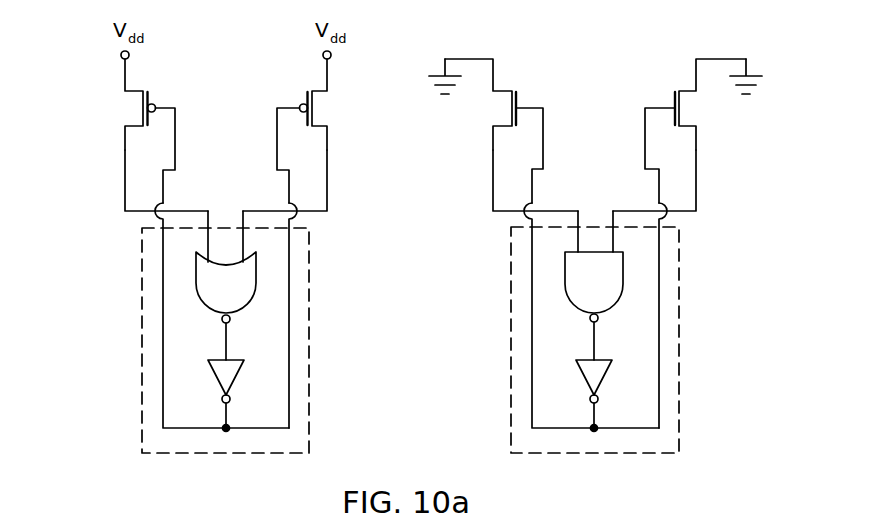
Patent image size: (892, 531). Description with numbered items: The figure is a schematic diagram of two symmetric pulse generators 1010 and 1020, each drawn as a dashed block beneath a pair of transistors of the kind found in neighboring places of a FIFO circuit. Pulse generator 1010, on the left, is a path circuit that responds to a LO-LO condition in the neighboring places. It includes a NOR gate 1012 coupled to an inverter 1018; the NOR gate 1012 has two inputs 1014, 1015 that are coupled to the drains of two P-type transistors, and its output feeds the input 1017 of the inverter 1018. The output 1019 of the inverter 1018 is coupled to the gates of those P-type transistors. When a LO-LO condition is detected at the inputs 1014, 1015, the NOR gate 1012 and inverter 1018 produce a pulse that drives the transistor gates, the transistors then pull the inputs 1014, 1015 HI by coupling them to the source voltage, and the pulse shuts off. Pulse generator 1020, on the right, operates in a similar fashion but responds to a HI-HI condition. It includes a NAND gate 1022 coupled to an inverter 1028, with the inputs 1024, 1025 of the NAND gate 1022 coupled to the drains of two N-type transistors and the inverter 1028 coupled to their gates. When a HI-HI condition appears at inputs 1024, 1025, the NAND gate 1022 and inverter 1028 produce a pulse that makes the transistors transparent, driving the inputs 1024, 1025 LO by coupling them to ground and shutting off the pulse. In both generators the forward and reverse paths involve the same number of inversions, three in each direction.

The pulse generator 1010 is at (142, 432).
The NOR gate 1012 is at (250, 294).
The input 1014 is at (208, 238).
The input 1015 is at (243, 238).
The input of inverter 1017 is at (226, 340).
The inverter 1018 is at (235, 378).
The output of inverter 1019 is at (226, 418).
The pulse generator 1020 is at (511, 431).
The NAND gate 1022 is at (618, 294).
The input 1024 is at (577, 237).
The input 1025 is at (613, 237).
The inverter 1028 is at (605, 378).